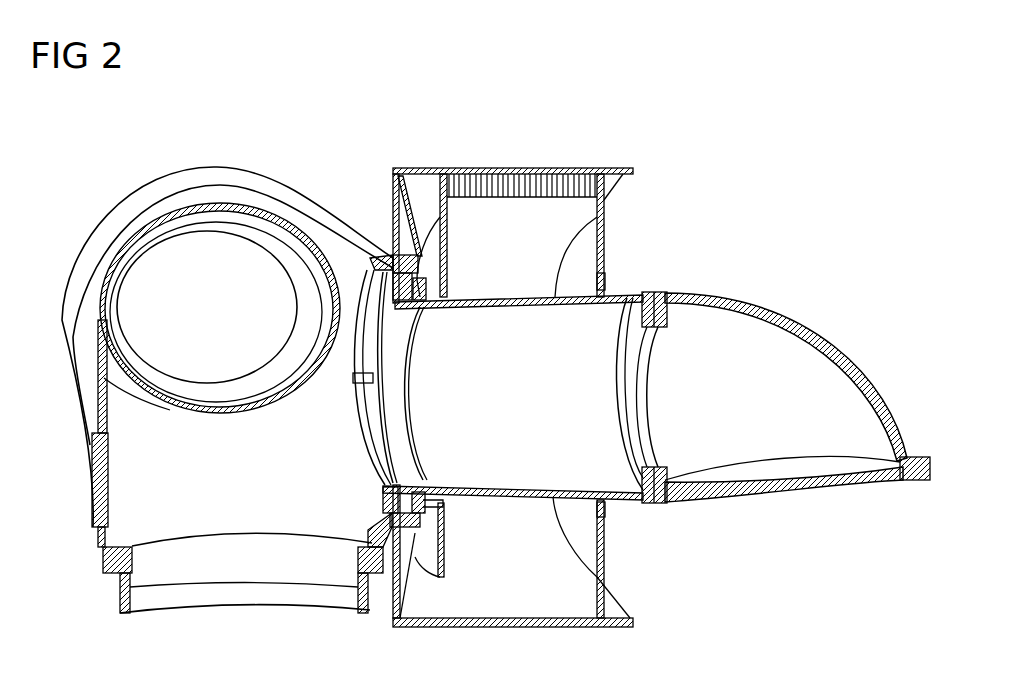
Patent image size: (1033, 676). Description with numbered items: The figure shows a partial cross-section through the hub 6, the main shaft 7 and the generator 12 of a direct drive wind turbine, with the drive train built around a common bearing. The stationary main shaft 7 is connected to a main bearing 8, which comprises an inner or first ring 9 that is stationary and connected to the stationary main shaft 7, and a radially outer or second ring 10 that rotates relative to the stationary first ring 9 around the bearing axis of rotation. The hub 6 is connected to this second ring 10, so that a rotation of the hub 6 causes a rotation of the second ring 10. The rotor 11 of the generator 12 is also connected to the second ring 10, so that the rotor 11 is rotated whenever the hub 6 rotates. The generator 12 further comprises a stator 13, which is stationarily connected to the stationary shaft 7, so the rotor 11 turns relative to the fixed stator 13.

The hub 6 is at (170, 185).
The stationary main shaft 7 is at (623, 292).
The main bearing 8 is at (414, 412).
The first ring 9 is at (410, 310).
The second ring 10 is at (402, 265).
The rotor 11 is at (512, 168).
The generator 12 is at (676, 159).
The stator 13 is at (590, 188).